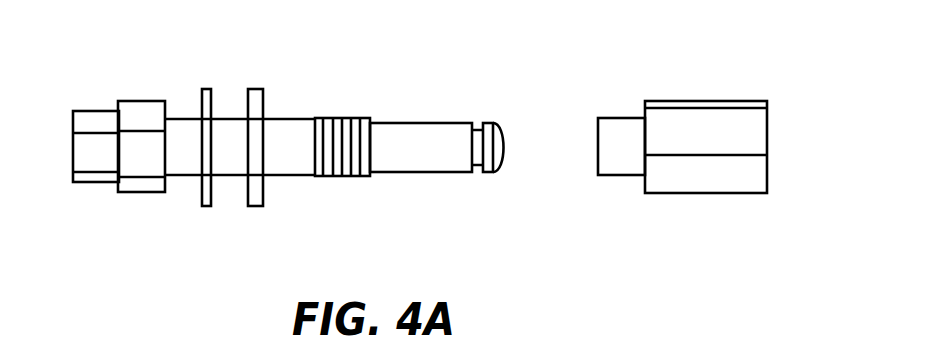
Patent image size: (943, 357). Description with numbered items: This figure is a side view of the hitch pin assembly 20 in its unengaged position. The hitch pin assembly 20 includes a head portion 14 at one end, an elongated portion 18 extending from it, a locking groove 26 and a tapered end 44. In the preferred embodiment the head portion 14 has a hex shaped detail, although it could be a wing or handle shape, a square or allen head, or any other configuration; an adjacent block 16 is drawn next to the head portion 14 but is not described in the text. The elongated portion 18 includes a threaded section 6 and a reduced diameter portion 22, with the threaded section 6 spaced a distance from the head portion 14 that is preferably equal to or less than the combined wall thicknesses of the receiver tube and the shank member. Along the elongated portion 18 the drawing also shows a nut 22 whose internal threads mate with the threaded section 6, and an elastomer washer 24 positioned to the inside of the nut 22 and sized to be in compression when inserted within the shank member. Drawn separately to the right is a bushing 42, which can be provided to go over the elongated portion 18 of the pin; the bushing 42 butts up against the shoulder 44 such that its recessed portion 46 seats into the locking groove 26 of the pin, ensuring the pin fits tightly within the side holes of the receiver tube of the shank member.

The hitch pin assembly 20 is at (154, 44).
The head portion 14 is at (77, 185).
The coupling body 16 is at (133, 180).
The elongated portion 18 is at (278, 118).
The reduced diameter portion 22 is at (207, 206).
The elastomer washer 24 is at (255, 206).
The threaded section 6 is at (335, 176).
The locking groove 26 is at (473, 121).
The tapered end 44 is at (504, 147).
The recessed portion 46 is at (613, 118).
The bushing 42 is at (767, 166).